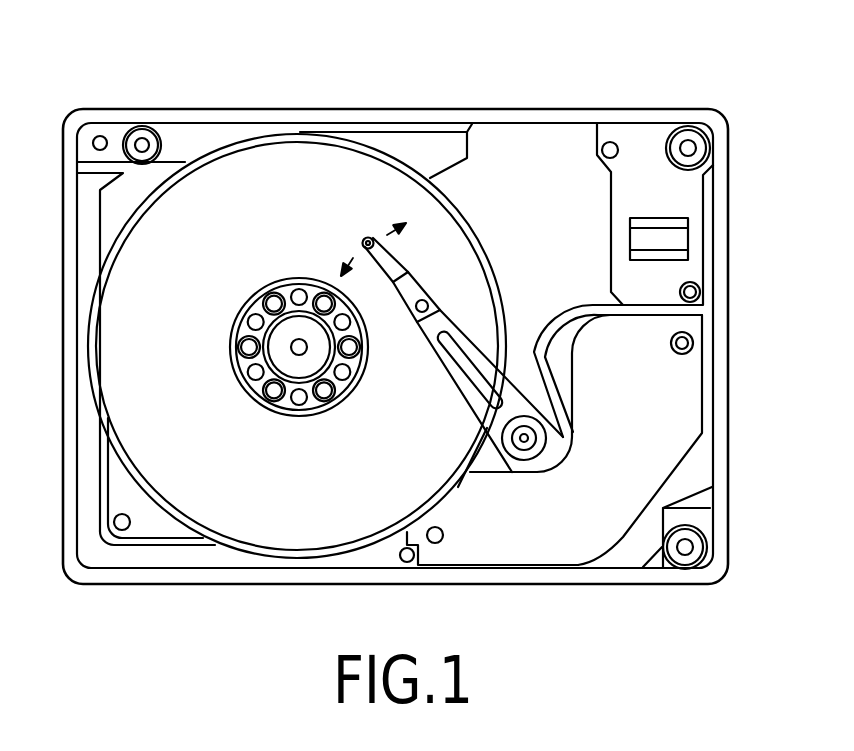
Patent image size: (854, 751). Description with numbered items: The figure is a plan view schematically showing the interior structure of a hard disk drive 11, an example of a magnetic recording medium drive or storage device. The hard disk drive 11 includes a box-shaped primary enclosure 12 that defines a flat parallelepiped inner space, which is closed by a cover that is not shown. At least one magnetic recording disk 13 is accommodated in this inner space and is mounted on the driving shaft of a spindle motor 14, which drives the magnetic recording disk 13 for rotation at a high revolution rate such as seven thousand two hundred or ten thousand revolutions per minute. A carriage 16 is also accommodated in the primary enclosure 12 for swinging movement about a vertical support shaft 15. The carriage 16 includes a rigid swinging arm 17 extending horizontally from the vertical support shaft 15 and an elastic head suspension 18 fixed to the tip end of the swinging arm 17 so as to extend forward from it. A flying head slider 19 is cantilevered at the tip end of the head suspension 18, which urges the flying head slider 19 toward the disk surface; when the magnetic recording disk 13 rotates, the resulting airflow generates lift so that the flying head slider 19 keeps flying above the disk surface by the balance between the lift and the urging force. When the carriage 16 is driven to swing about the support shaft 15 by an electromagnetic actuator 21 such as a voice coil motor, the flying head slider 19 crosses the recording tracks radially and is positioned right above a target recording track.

The hard disk drive 11 is at (450, 84).
The primary enclosure 12 is at (292, 584).
The magnetic recording disk 13 is at (486, 256).
The spindle motor 14 is at (275, 355).
The vertical support shaft 15 is at (533, 443).
The carriage 16 is at (466, 413).
The swinging arm 17 is at (461, 386).
The head suspension 18 is at (399, 278).
The flying head slider 19 is at (362, 245).
The electromagnetic actuator 21 is at (632, 560).